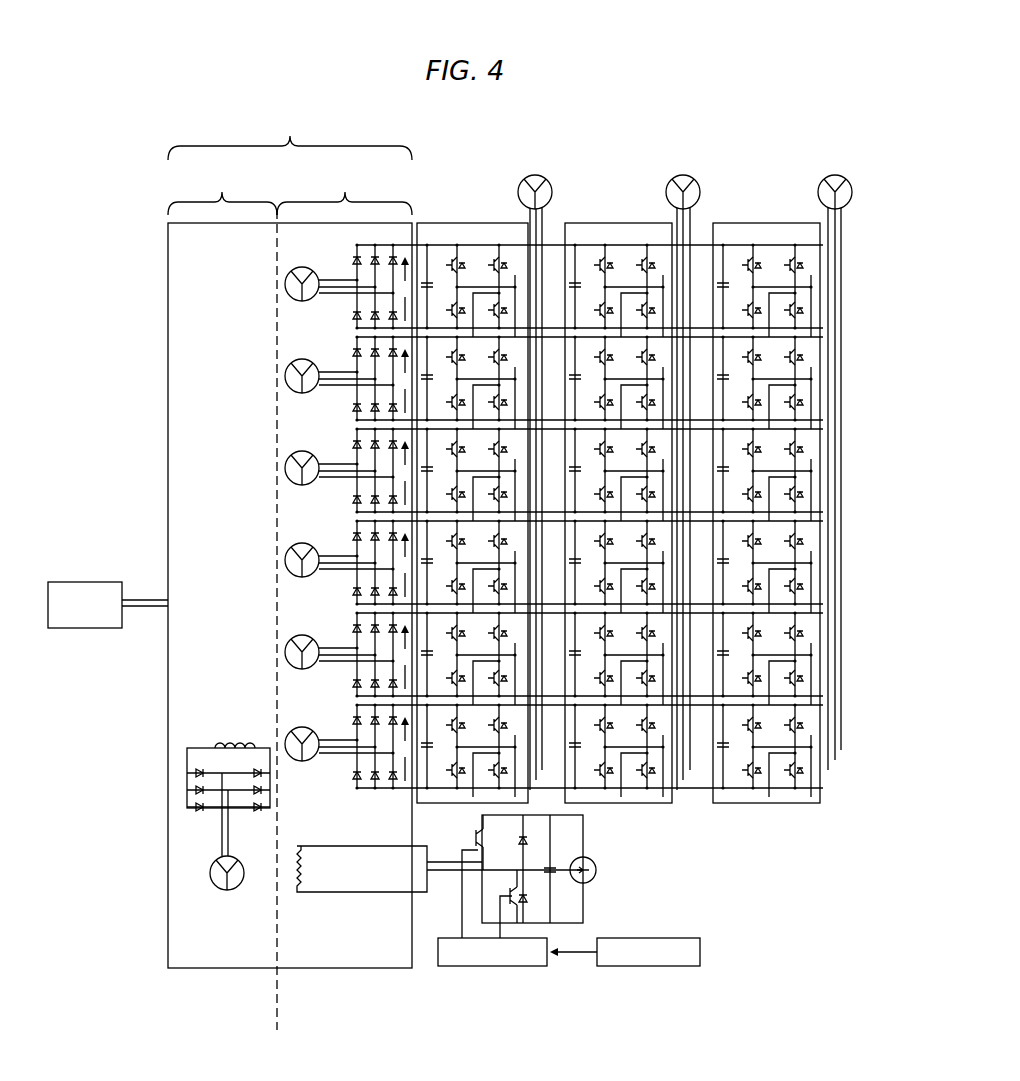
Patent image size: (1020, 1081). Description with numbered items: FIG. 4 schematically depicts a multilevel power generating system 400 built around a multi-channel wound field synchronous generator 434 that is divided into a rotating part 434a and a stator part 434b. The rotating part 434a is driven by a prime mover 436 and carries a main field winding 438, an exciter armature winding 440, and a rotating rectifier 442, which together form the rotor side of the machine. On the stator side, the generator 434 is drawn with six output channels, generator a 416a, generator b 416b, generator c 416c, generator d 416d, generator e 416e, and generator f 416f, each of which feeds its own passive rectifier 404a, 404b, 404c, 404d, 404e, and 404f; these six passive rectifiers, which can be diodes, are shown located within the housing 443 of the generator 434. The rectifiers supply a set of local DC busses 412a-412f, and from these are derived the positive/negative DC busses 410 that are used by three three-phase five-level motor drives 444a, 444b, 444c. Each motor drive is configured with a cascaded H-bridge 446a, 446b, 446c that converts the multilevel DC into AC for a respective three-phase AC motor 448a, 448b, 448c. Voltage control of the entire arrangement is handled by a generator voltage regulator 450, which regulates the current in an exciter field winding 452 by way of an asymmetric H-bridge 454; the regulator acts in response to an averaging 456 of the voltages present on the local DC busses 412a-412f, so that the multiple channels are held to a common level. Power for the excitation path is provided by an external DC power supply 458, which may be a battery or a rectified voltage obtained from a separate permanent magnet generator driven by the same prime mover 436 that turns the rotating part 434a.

The power generating system 400 is at (715, 128).
The passive rectifier 404a is at (375, 272).
The passive rectifier 404b is at (375, 364).
The passive rectifier 404c is at (375, 456).
The passive rectifier 404d is at (375, 548).
The passive rectifier 404e is at (375, 640).
The passive rectifier 404f is at (375, 732).
The positive/negative DC busses 410 is at (550, 236).
The local DC busses 412a-412f is at (405, 798).
The generator a 416a is at (285, 285).
The generator b 416b is at (285, 377).
The generator c 416c is at (285, 469).
The generator d 416d is at (285, 561).
The generator e 416e is at (285, 653).
The generator f 416f is at (285, 745).
The wound field synchronous generator 434 is at (290, 129).
The rotating part 434a is at (222, 186).
The stator part 434b is at (344, 186).
The prime mover 436 is at (108, 605).
The main field winding 438 is at (228, 748).
The exciter armature winding 440 is at (240, 890).
The rotating rectifier 442 is at (187, 778).
The housing 443 is at (168, 354).
The 3-phase 5-level motor drive 444a is at (465, 222).
The 3-phase 5-level motor drive 444b is at (615, 222).
The 3-phase 5-level motor drive 444c is at (770, 222).
The cascaded H-bridge 446a is at (469, 512).
The cascaded H-bridge 446b is at (617, 512).
The cascaded H-bridge 446c is at (765, 512).
The 3-phase AC motor 448a is at (545, 193).
The 3-phase AC motor 448b is at (695, 194).
The 3-phase AC motor 448c is at (845, 196).
The generator voltage regulator 450 is at (492, 952).
The exciter field winding 452 is at (298, 890).
The asymmetric H-bridge 454 is at (598, 850).
The averaging 456 is at (626, 952).
The external DC power supply 458 is at (598, 872).